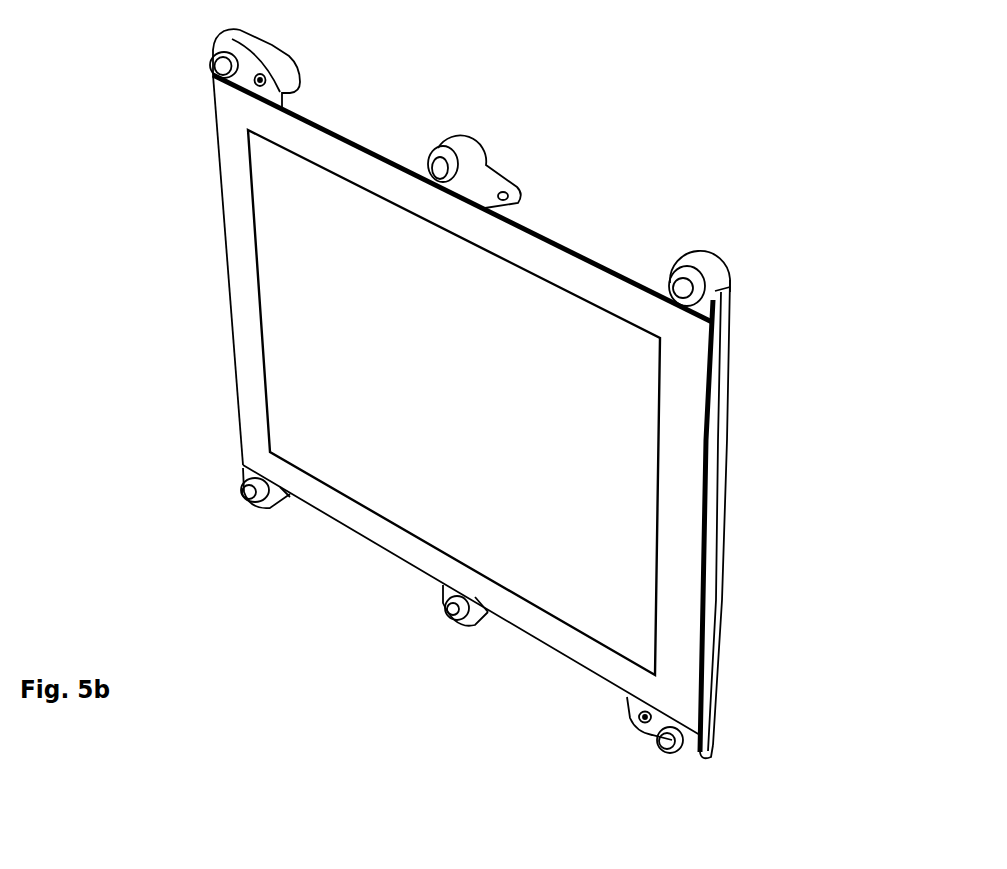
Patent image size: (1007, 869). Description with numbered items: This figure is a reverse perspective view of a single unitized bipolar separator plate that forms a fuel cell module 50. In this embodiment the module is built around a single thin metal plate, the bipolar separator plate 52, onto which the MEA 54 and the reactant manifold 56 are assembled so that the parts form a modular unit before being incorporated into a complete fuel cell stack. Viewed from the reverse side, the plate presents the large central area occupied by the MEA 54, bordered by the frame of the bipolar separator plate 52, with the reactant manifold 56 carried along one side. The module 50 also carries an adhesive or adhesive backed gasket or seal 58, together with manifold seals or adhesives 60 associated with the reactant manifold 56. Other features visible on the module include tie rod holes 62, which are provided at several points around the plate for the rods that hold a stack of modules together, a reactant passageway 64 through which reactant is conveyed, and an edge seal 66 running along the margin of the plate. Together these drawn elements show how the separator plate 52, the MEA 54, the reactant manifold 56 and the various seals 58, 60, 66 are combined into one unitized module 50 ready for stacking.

The fuel cell module 50 is at (748, 153).
The bipolar separator plate 52 is at (483, 186).
The MEA 54 is at (388, 352).
The reactant manifold 56 is at (292, 68).
The adhesive backed gasket or seal 58 is at (682, 467).
The manifold seal 60 is at (722, 280).
The tie rod hole 62 is at (212, 67).
The reactant passageway 64 is at (251, 83).
The edge seal 66 is at (713, 377).